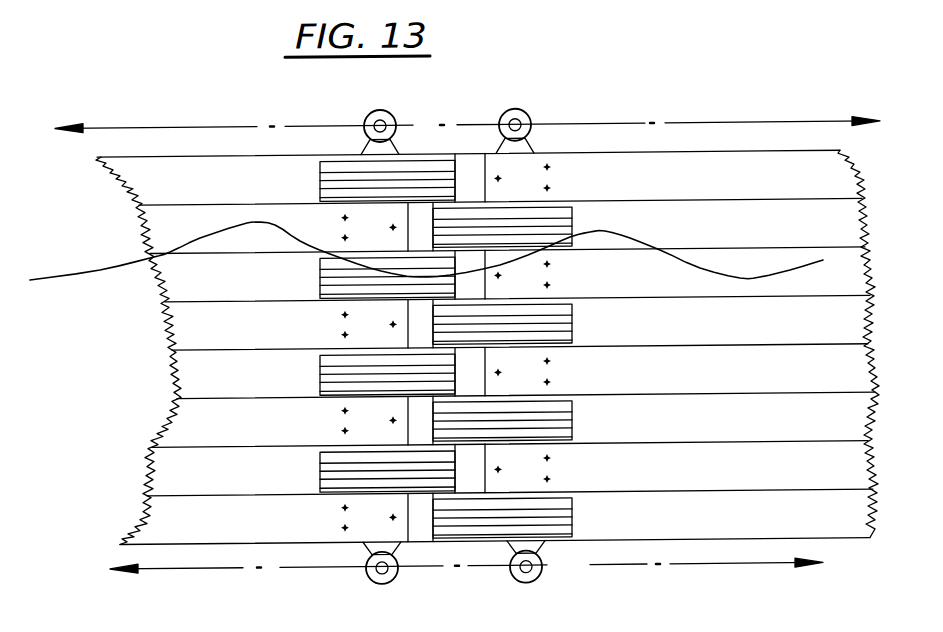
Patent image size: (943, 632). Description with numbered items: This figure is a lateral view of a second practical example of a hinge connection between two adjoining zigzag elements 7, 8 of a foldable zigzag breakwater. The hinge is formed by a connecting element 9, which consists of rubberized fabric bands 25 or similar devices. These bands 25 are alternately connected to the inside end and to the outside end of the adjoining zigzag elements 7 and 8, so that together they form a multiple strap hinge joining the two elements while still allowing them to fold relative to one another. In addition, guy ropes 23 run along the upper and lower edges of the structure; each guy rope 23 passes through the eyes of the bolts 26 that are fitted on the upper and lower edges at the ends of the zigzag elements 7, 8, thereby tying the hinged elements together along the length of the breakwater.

The zigzag element 7 is at (280, 529).
The zigzag element 8 is at (615, 528).
The connecting element 9 is at (452, 586).
The guy rope 23 is at (602, 118).
The rubberized fabric band 25 is at (406, 176).
The bolt 26 is at (520, 116).